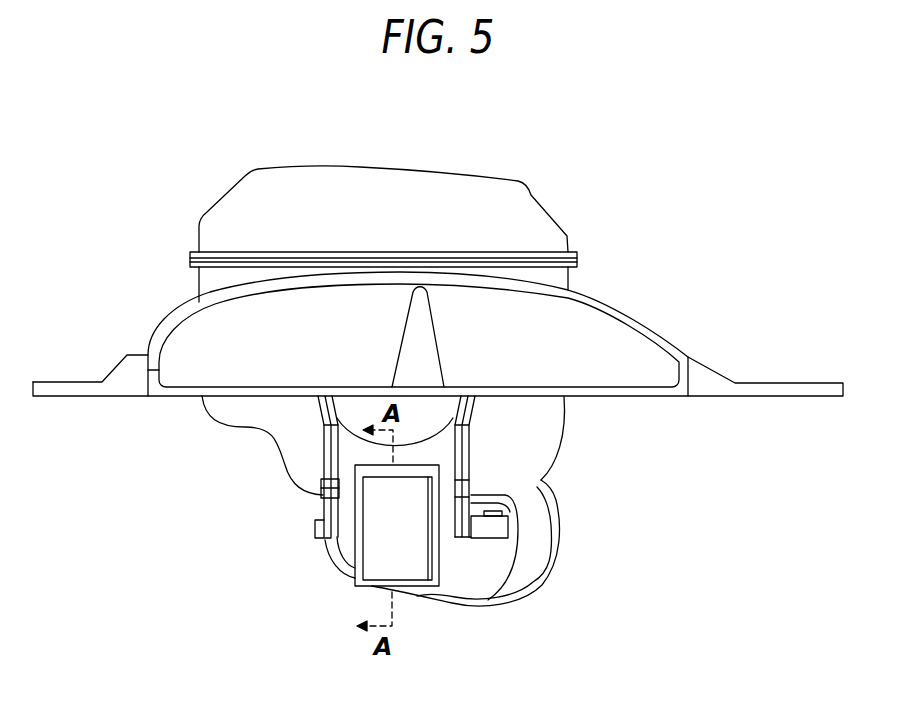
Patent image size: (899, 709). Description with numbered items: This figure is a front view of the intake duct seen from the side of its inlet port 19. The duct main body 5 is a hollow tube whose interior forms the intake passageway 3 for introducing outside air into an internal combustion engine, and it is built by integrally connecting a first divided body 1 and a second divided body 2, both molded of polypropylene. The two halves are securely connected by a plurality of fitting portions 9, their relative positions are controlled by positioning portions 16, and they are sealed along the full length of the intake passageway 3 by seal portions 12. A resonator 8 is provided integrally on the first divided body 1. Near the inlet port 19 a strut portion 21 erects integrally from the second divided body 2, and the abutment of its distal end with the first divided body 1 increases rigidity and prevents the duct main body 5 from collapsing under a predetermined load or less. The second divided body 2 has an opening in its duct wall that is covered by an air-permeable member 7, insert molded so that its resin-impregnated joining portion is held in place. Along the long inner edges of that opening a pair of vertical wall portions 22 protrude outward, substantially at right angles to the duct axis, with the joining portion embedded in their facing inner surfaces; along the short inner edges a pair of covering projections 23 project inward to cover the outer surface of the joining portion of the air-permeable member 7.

The first divided body 1 is at (607, 304).
The second divided body 2 is at (636, 393).
The intake passageway 3 is at (578, 330).
The duct main body 5 is at (674, 314).
The air-permeable member 7 is at (354, 576).
The resonator 8 is at (497, 162).
The fitting portions 9 is at (490, 510).
The seal portions 12 is at (323, 458).
The positioning portions 16 is at (322, 496).
The inlet port 19 is at (253, 353).
The strut portion 21 is at (403, 347).
The vertical wall portions 22 is at (345, 550).
The covering projections 23 is at (383, 473).